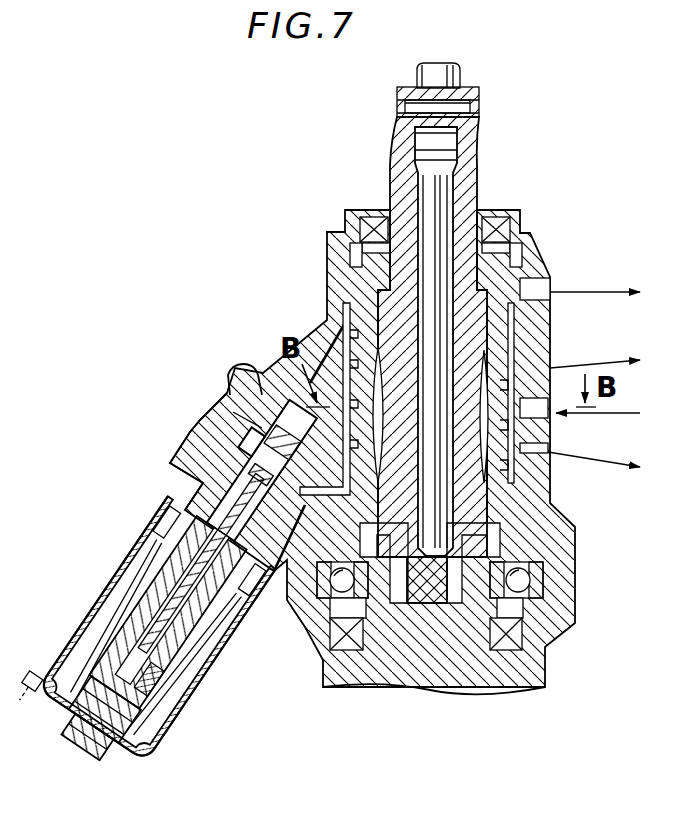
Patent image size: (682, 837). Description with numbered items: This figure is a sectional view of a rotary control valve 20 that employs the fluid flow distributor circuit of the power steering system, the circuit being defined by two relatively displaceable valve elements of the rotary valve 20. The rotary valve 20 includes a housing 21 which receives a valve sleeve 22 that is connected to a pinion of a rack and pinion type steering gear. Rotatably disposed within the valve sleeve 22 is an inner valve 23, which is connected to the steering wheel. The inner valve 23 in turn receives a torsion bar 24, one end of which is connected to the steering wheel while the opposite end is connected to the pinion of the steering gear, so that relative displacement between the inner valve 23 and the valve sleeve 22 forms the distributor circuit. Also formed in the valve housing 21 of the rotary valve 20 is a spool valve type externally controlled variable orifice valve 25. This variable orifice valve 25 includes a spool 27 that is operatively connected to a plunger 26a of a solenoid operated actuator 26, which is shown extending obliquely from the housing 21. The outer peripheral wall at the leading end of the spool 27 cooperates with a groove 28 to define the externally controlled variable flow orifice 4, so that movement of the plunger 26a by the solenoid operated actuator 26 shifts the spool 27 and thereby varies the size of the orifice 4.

The rotary control valve 20 is at (541, 216).
The housing 21 is at (562, 553).
The valve sleeve 22 is at (500, 331).
The inner valve 23 is at (468, 178).
The torsion bar 24 is at (427, 212).
The externally controlled variable flow orifice 4 is at (216, 432).
The groove 28 is at (250, 405).
The externally controlled variable orifice valve 25 is at (193, 498).
The solenoid operated actuator 26 is at (95, 613).
The plunger 26a is at (153, 683).
The spool 27 is at (172, 527).